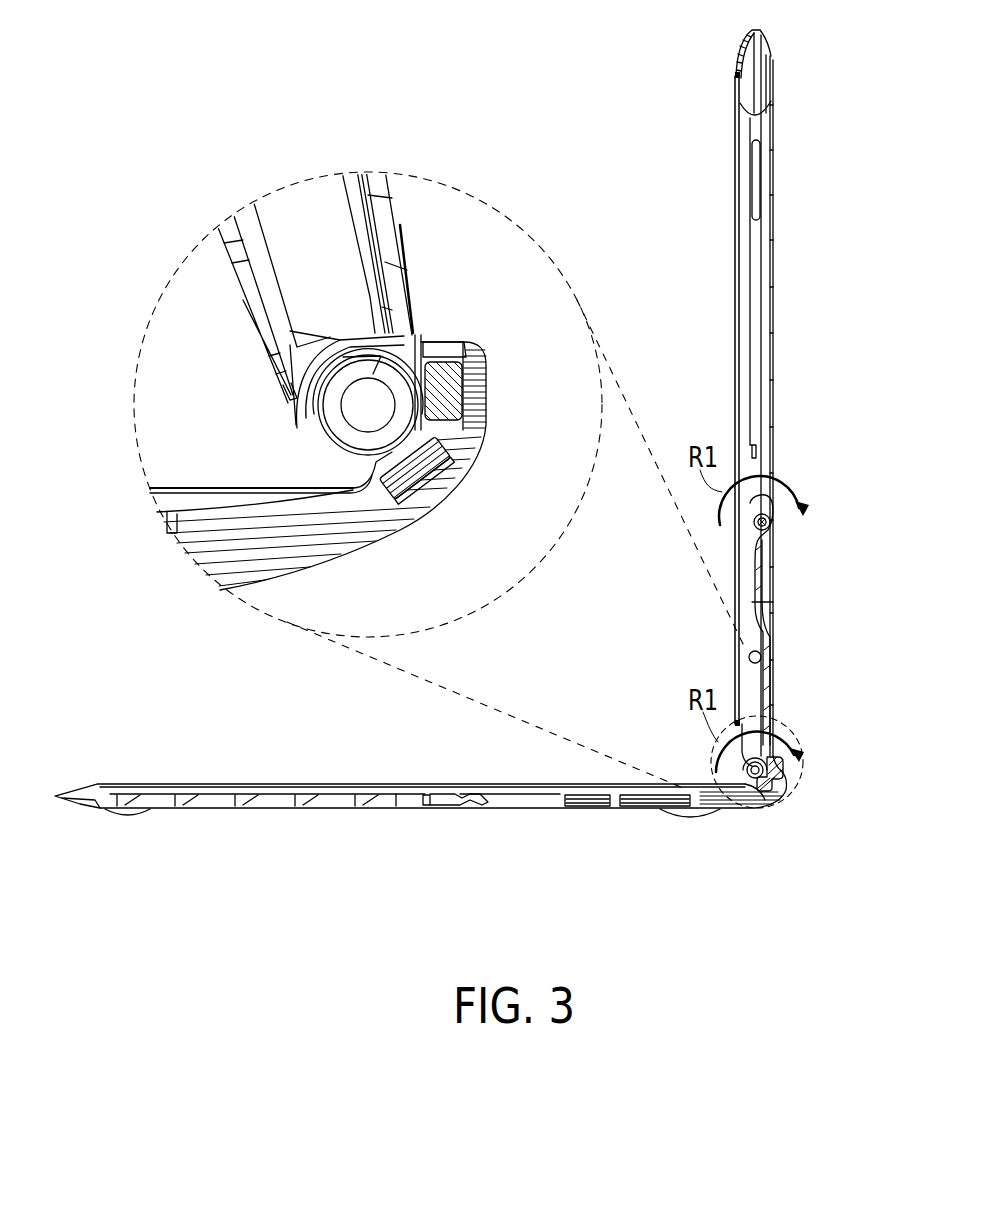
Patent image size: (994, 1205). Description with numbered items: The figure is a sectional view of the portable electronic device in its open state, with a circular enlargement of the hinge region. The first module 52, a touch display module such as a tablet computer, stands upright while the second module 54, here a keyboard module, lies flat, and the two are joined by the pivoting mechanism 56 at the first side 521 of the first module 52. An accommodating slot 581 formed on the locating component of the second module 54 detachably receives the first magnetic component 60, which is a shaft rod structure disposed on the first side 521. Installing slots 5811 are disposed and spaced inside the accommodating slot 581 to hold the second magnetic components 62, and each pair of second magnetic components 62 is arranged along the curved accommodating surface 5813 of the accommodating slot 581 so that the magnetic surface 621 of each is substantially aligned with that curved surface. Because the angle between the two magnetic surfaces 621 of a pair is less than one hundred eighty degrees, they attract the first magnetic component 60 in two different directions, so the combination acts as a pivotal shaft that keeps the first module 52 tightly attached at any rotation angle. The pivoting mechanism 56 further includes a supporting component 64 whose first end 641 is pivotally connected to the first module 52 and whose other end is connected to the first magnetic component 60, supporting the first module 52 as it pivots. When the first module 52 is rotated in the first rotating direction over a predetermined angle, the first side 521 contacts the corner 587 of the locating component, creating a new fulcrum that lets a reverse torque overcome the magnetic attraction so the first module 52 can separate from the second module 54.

The first module 52 is at (262, 298).
The first side 521 is at (278, 399).
The second module 54 is at (200, 558).
The pivoting mechanism 56 is at (792, 802).
The accommodating slot 581 is at (420, 345).
The installing slot 5811 is at (458, 358).
The curved accommodating surface 5813 is at (462, 432).
The corner 587 is at (446, 348).
The first magnetic component 60 is at (356, 406).
The second magnetic component 62 is at (458, 385).
The magnetic surface 621 is at (355, 440).
The supporting component 64 is at (752, 578).
The first end 641 is at (754, 522).